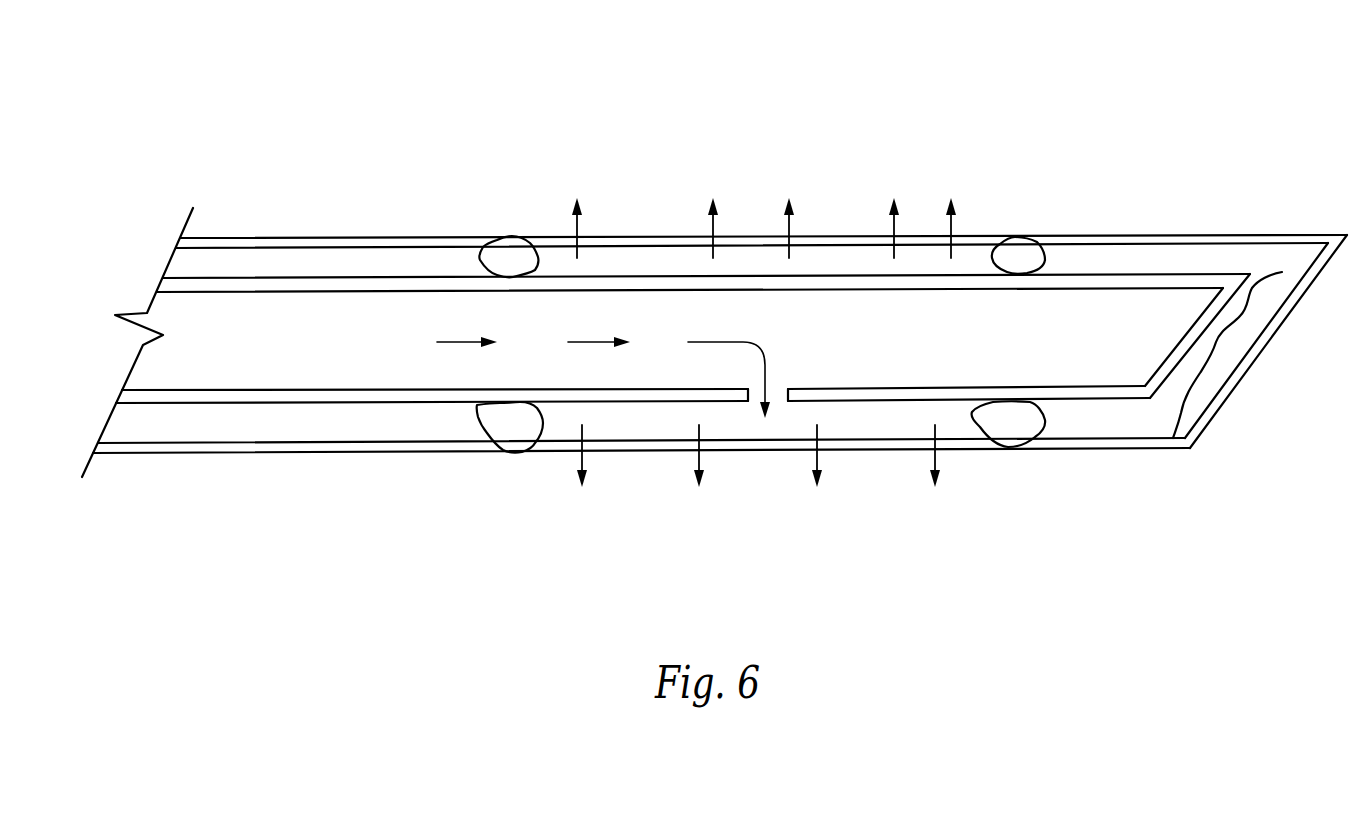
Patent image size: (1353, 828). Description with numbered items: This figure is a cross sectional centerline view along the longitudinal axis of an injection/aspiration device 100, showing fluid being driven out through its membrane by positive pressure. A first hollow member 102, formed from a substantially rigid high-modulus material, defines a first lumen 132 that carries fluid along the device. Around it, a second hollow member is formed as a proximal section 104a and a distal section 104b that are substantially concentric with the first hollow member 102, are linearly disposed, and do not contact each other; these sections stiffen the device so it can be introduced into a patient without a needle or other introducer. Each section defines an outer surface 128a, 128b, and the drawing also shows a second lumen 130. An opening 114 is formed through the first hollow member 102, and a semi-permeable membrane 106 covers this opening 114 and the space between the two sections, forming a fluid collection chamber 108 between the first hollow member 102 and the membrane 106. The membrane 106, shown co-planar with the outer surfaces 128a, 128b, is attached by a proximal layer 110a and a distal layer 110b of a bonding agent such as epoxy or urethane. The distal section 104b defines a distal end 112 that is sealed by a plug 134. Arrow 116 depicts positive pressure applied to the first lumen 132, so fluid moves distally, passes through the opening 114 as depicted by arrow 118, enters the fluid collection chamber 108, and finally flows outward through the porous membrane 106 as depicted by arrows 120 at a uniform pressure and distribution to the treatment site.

The injection/aspiration device 100 is at (740, 110).
The first hollow member 102 is at (617, 395).
The proximal section of second hollow member 104a is at (353, 452).
The distal section of second hollow member 104b is at (1203, 238).
The semi-permeable membrane 106 is at (668, 242).
The fluid collection chamber 108 is at (855, 255).
The proximal layer of bonding agent 110a is at (507, 250).
The distal layer of bonding agent 110b is at (1018, 237).
The distal end 112 is at (1265, 350).
The opening 114 is at (778, 393).
The arrow depicting positive fluid pressure 116 is at (453, 342).
The arrow depicting fluid passing through opening 118 is at (717, 347).
The arrow depicting fluid passing through semi-permeable membrane to patient 120 is at (572, 228).
The outer surface of proximal section of second hollow member 128a is at (312, 242).
The outer surface of distal section of second hollow member 128b is at (1175, 450).
The second lumen 130 is at (237, 255).
The first lumen 132 is at (1067, 370).
The plug 134 is at (1280, 270).